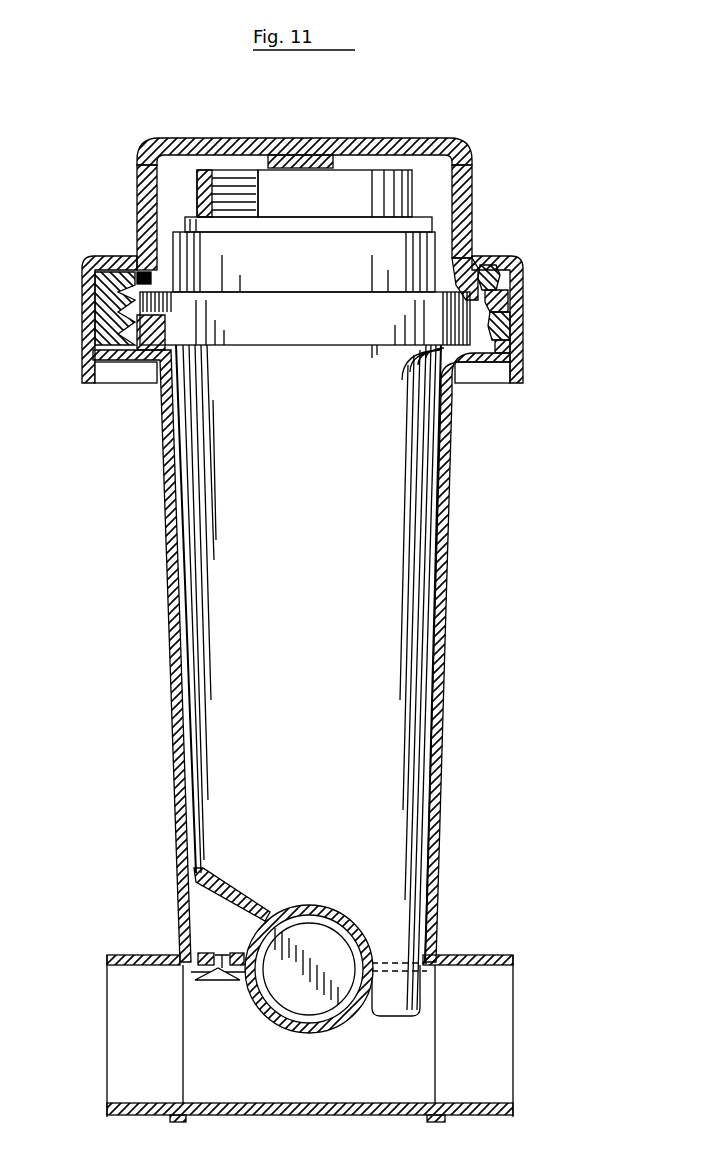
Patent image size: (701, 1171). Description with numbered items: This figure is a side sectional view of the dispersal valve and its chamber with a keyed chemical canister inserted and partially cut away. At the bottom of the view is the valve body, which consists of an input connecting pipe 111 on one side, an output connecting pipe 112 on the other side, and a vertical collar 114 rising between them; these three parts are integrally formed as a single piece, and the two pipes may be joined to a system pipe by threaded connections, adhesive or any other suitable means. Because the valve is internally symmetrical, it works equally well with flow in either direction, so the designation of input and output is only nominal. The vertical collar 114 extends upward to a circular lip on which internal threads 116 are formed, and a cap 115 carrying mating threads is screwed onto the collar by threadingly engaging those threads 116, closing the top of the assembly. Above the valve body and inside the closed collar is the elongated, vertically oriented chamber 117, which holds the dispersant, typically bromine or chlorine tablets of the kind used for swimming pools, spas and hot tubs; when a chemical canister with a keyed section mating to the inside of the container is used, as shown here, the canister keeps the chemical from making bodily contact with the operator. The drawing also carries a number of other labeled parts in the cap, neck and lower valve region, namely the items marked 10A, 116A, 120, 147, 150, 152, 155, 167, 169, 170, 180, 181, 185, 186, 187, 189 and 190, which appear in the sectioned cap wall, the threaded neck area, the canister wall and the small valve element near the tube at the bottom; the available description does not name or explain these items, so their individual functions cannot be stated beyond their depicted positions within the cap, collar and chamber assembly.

The tube outlet ring 10A is at (310, 905).
The input connecting pipe 111 is at (153, 1110).
The output connecting pipe 112 is at (490, 1108).
The vertical collar 114 is at (445, 625).
The cap 115 is at (470, 227).
The internal threads 116 is at (548, 354).
The thread flange 116A is at (523, 320).
The chamber 117 is at (448, 553).
The filter cartridge 120 is at (402, 718).
The tube 147 is at (287, 995).
The cap lower portion 150 is at (478, 277).
The cap side wall 152 is at (472, 212).
The closure assembly 155 is at (568, 307).
The lock ring 167 is at (512, 292).
The seal ring 169 is at (500, 267).
The cap top 170 is at (438, 140).
The outer shell flange 180 is at (86, 312).
The inner ring 181 is at (90, 343).
The valve 185 is at (225, 987).
The valve seat 186 is at (205, 940).
The bottom wall 187 is at (205, 935).
The valve retainer 189 is at (238, 955).
The boss 190 is at (268, 157).